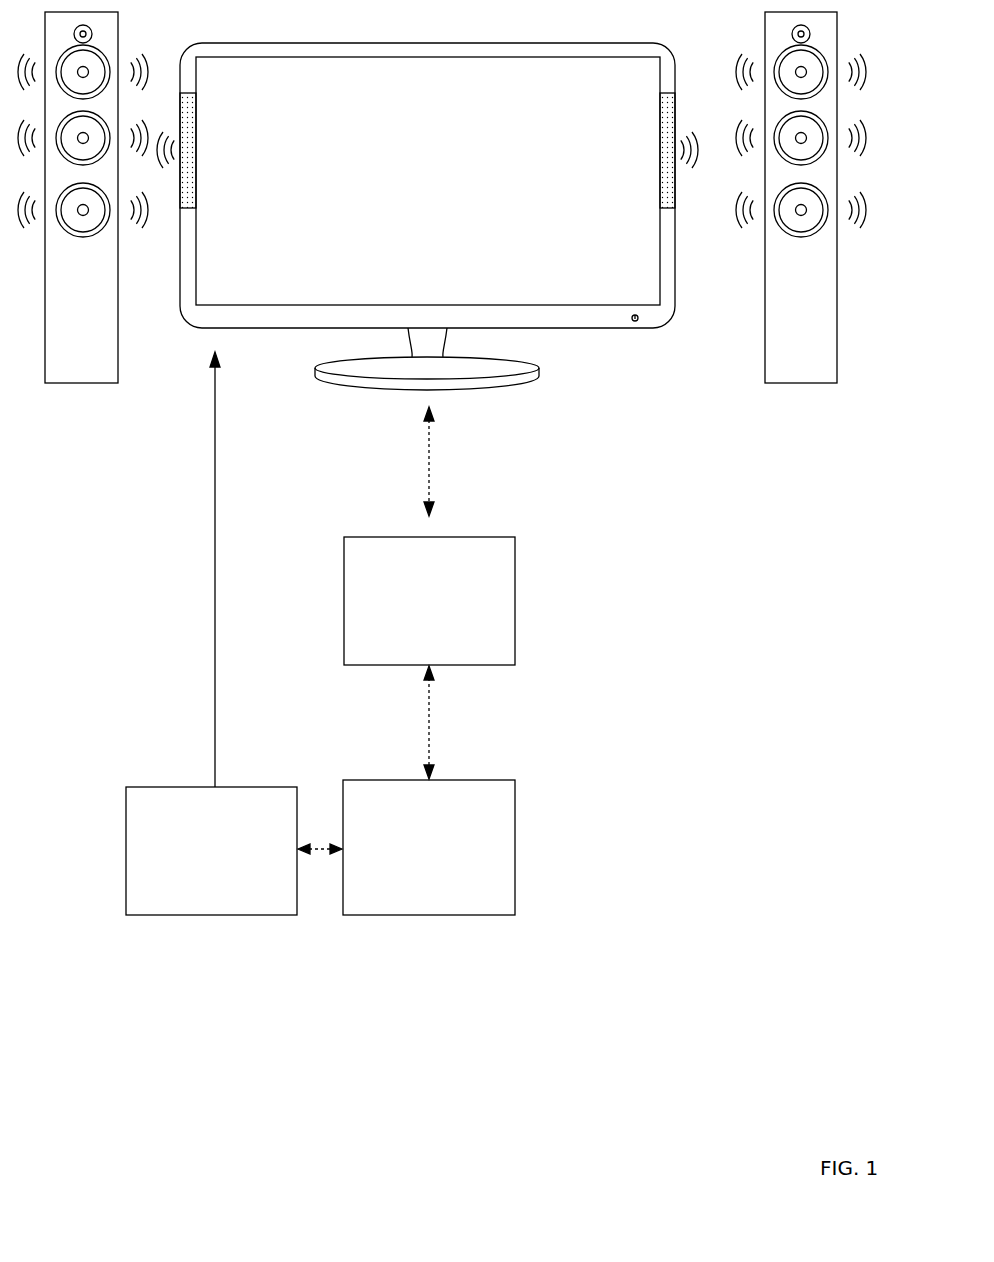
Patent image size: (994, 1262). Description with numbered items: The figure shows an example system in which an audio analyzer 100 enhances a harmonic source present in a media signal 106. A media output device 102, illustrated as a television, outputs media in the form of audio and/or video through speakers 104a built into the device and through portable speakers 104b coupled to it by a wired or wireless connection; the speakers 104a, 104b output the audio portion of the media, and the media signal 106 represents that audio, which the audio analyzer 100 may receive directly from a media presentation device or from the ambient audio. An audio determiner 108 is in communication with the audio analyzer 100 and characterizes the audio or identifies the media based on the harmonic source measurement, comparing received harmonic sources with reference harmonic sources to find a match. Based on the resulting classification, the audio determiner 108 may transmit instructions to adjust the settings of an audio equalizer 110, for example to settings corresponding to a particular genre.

The audio analyzer 100 is at (412, 641).
The media output device 102 is at (597, 43).
The speakers 104a is at (716, 90).
The portable speakers 104b is at (101, 56).
The media signal 106 is at (702, 154).
The audio determiner 108 is at (412, 886).
The audio equalizer 110 is at (194, 890).